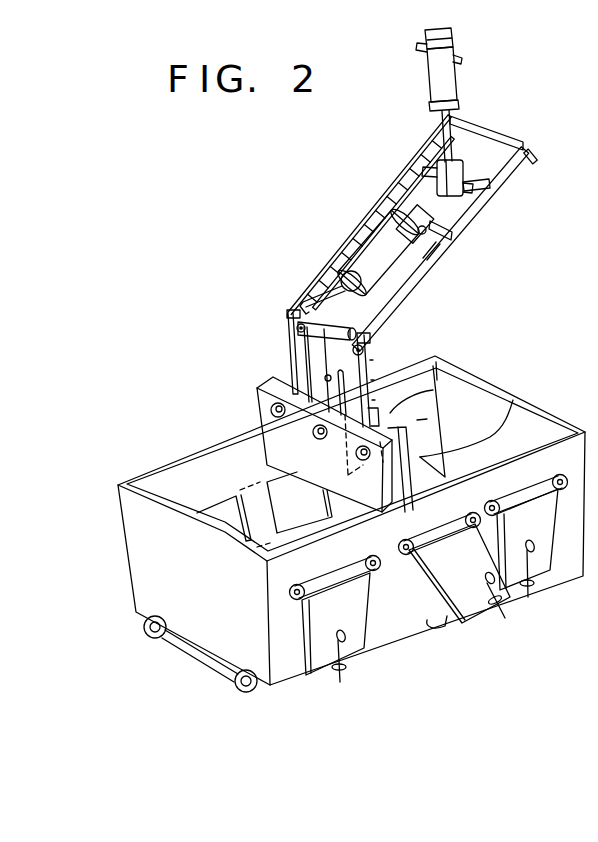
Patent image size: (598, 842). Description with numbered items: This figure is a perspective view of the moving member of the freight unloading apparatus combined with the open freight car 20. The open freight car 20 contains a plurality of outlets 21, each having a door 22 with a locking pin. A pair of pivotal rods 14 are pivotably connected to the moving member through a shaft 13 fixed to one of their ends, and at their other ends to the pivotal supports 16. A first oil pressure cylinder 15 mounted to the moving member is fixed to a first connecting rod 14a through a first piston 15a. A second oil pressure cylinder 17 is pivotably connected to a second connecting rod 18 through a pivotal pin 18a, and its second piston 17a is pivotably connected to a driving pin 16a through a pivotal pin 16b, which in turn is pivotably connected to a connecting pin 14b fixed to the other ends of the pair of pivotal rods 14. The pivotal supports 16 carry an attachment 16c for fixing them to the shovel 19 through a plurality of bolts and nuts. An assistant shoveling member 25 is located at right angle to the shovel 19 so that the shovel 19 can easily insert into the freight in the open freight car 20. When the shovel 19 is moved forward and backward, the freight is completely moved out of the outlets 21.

The shaft 13 is at (488, 137).
The pivotal rods 14 is at (397, 310).
The first connecting rod 14a is at (500, 184).
The connecting pin 14b is at (363, 348).
The first oil pressure cylinder 15 is at (450, 80).
The first piston 15a is at (438, 124).
The pivotal supports 16 is at (292, 358).
The driving pin 16a is at (307, 288).
The pivotal pin 16b is at (290, 340).
The attachment 16c is at (256, 390).
The second oil pressure cylinder 17 is at (380, 253).
The second piston 17a is at (313, 287).
The second connecting rod 18 is at (447, 220).
The pivotal pin 18a is at (430, 263).
The shovel 19 is at (270, 456).
The open freight car 20 is at (390, 617).
The outlets 21 is at (513, 400).
The door 22 is at (350, 610).
The assistant shoveling member 25 is at (445, 366).